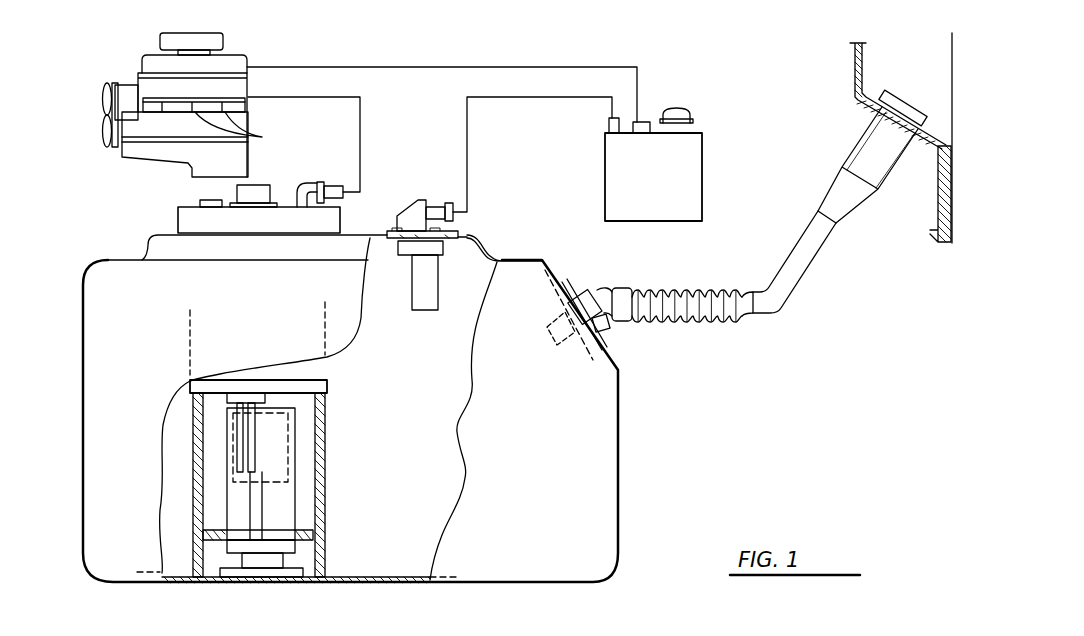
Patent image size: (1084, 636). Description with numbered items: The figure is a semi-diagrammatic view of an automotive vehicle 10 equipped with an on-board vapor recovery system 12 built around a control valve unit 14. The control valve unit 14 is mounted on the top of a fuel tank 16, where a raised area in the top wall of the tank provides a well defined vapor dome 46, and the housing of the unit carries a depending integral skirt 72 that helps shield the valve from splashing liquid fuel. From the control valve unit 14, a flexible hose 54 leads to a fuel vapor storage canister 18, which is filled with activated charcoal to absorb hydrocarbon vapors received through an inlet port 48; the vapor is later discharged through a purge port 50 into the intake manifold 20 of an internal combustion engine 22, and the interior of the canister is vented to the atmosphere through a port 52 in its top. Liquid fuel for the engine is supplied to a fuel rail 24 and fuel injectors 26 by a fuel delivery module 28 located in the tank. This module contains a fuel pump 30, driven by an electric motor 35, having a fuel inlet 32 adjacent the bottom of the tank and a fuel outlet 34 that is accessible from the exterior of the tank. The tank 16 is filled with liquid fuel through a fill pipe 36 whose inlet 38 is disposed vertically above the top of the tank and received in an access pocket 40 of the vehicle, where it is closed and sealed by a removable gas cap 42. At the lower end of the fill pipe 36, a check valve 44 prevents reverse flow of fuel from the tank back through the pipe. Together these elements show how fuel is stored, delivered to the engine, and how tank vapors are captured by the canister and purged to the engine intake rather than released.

The automotive vehicle 10 is at (822, 58).
The on-board vapor recovery system 12 is at (460, 57).
The control valve unit 14 is at (407, 203).
The fuel tank 16 is at (622, 490).
The fuel vapor storage canister 18 is at (703, 165).
The intake manifold 20 is at (238, 58).
The internal combustion engine 22 is at (123, 60).
The fuel rail 24 is at (220, 98).
The fuel injectors 26 is at (242, 128).
The fuel delivery module 28 is at (173, 217).
The fuel pump 30 is at (288, 547).
The fuel inlet 32 is at (275, 562).
The fuel outlet 34 is at (328, 183).
The electric motor 35 is at (288, 445).
The fill pipe 36 is at (803, 262).
The inlet 38 is at (857, 138).
The access pocket 40 is at (922, 58).
The removable gas cap 42 is at (908, 105).
The check valve 44 is at (575, 333).
The vapor dome 46 is at (455, 255).
The inlet port 48 is at (610, 123).
The purge port 50 is at (647, 120).
The port 52 is at (692, 110).
The flexible hose 54 is at (467, 123).
The depending integral skirt 72 is at (453, 230).